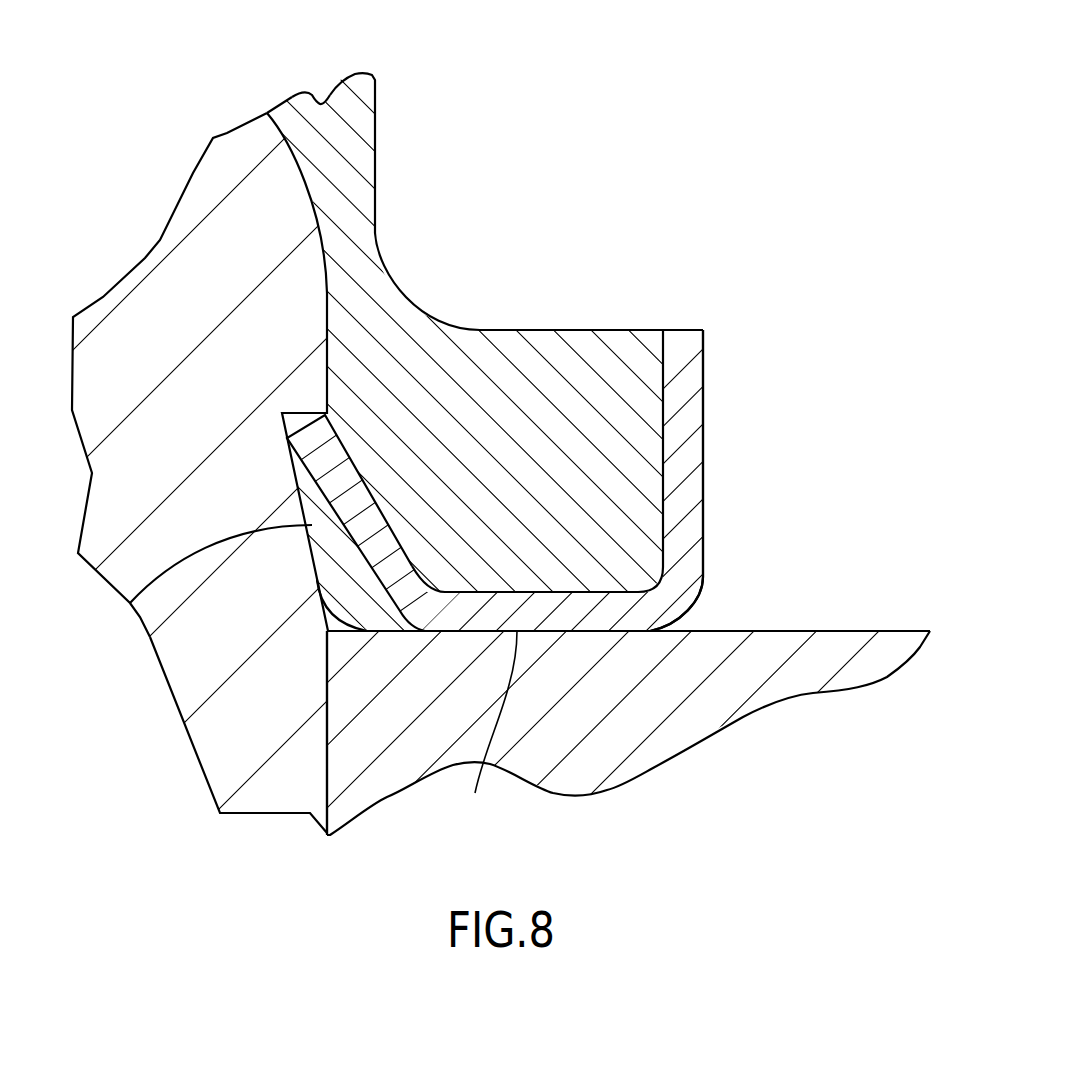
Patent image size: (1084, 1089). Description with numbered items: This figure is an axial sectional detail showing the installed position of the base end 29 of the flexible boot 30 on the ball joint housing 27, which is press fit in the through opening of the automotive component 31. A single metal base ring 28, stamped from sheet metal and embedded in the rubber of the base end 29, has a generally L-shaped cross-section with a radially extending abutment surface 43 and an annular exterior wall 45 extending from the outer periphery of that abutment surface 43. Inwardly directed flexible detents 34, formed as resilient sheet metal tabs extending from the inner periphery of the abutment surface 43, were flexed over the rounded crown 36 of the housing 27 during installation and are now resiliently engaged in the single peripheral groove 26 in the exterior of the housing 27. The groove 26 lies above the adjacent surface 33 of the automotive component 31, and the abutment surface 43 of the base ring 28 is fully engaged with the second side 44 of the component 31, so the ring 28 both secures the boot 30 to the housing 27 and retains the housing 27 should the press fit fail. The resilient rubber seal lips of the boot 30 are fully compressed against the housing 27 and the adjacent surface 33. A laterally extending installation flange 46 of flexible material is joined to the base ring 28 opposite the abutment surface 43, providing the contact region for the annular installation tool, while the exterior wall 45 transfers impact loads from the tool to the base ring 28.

The peripheral groove 26 is at (133, 605).
The ball joint housing 27 is at (195, 638).
The metal base ring 28 is at (730, 463).
The base end 29 is at (535, 323).
The flexible boot 30 is at (375, 132).
The automotive component 31 is at (612, 748).
The adjacent surface 33 is at (888, 631).
The flexible detents 34 is at (337, 438).
The crown 36 is at (310, 100).
The abutment surface 43 is at (486, 731).
The second side 44 is at (764, 631).
The annular exterior wall 45 is at (703, 373).
The installation flange 46 is at (579, 329).